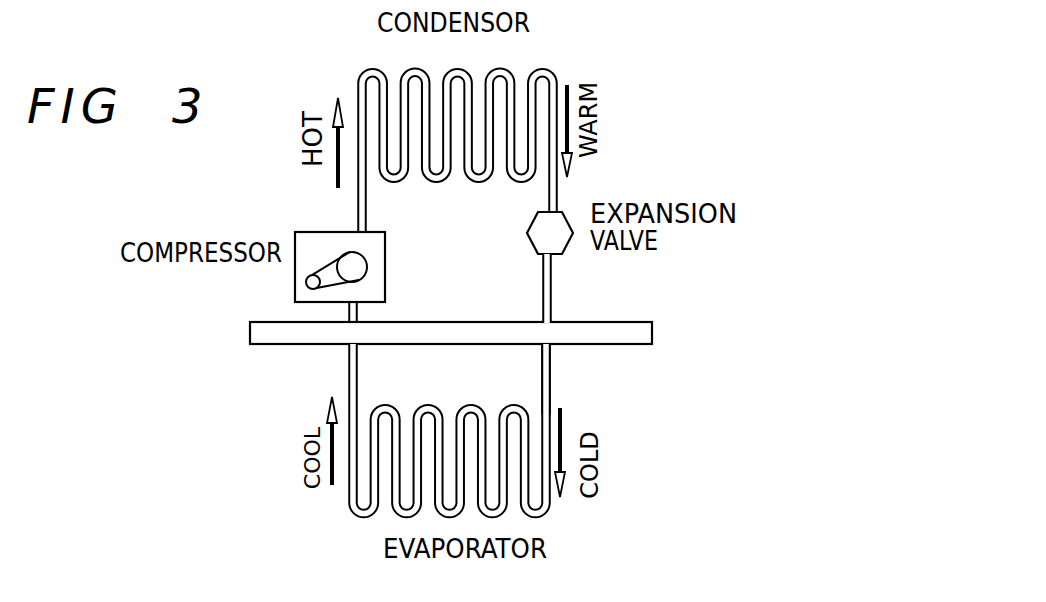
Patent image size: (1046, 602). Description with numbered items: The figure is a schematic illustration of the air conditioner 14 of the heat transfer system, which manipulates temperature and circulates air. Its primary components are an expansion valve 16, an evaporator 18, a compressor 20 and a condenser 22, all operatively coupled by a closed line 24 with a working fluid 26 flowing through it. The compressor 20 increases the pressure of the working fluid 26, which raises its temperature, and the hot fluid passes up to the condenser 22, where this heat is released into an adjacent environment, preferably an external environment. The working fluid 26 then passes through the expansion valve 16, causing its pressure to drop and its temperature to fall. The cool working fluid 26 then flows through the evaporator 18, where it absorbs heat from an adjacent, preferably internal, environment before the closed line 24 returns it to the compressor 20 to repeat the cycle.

The air conditioner 14 is at (663, 134).
The expansion valve 16 is at (566, 250).
The evaporator 18 is at (549, 516).
The compressor 20 is at (308, 231).
The condenser 22 is at (377, 71).
The closed line 24 is at (550, 300).
The working fluid 26 is at (548, 375).